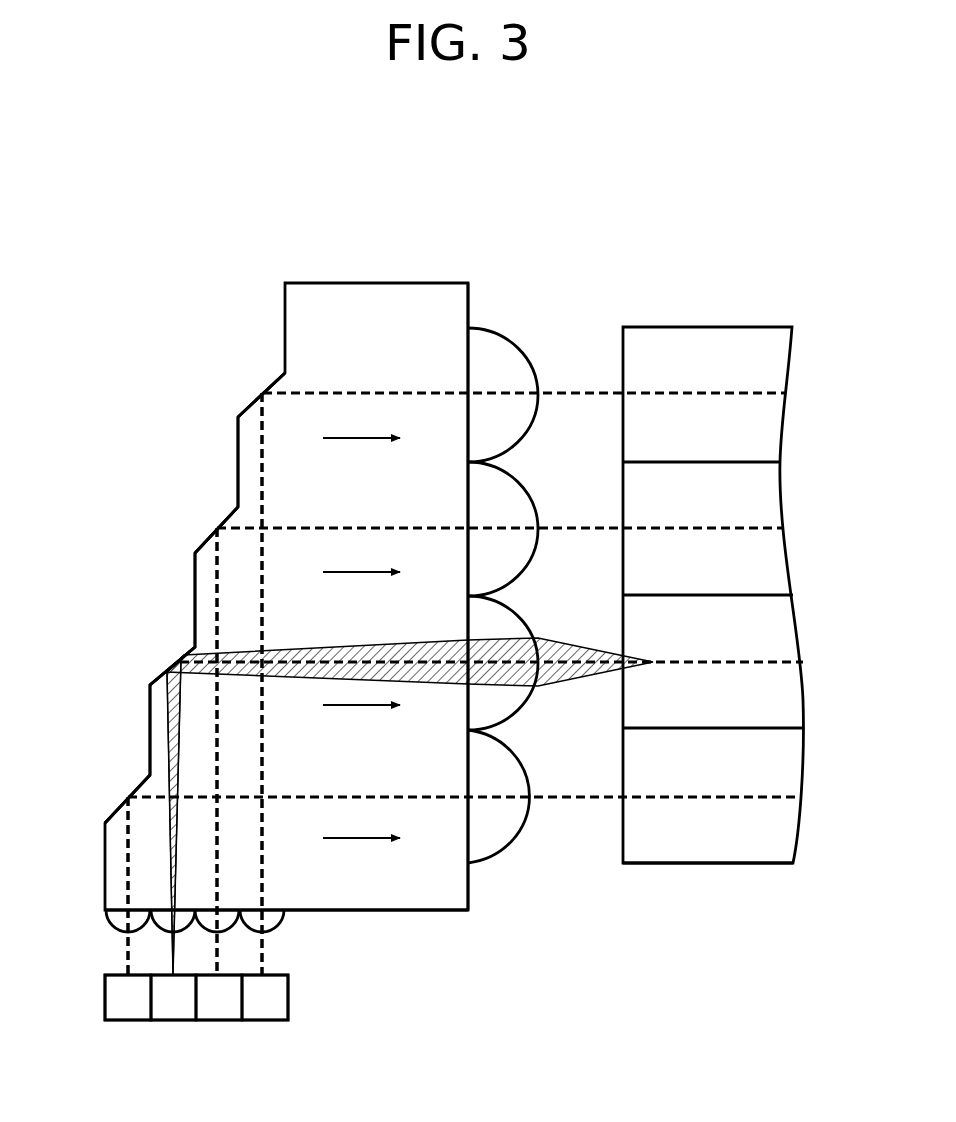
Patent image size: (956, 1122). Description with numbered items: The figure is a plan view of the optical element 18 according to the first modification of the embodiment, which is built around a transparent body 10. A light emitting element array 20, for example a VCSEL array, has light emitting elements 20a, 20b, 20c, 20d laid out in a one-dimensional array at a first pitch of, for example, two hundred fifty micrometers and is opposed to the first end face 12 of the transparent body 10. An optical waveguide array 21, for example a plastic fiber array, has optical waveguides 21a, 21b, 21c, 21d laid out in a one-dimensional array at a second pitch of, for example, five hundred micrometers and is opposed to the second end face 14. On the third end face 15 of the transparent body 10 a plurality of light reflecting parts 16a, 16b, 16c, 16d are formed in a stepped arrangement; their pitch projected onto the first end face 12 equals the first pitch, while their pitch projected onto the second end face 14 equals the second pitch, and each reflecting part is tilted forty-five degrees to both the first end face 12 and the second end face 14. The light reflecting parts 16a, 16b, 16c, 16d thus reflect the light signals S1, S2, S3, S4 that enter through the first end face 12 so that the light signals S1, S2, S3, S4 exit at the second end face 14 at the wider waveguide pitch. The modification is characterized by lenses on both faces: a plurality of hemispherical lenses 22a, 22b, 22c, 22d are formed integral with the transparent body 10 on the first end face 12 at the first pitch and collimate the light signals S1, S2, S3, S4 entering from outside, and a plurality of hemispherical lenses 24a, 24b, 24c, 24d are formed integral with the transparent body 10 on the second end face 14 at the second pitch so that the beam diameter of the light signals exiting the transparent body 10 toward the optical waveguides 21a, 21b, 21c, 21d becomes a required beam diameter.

The transparent body 10 is at (390, 298).
The first end face 12 is at (423, 914).
The second end face 14 is at (470, 300).
The third end face 15 is at (150, 528).
The light reflecting part 16a is at (146, 780).
The light reflecting part 16b is at (190, 648).
The light reflecting part 16c is at (232, 515).
The light reflecting part 16d is at (272, 385).
The optical element 18 is at (320, 245).
The light emitting element array 20 is at (302, 1002).
The light emitting element 20a is at (125, 1022).
The light emitting element 20b is at (173, 1022).
The light emitting element 20c is at (218, 1022).
The light emitting element 20d is at (263, 1022).
The optical waveguide array 21 is at (707, 310).
The optical waveguide 21a is at (787, 833).
The optical waveguide 21b is at (785, 697).
The optical waveguide 21c is at (777, 562).
The optical waveguide 21d is at (768, 428).
The lens 22a is at (110, 928).
The lens 22b is at (160, 932).
The lens 22c is at (230, 932).
The lens 22d is at (278, 929).
The lens 24a is at (528, 840).
The lens 24b is at (528, 707).
The lens 24c is at (528, 574).
The lens 24d is at (528, 432).
The light signal S1 is at (128, 895).
The light signal S2 is at (170, 814).
The light signal S3 is at (220, 826).
The light signal S4 is at (265, 878).